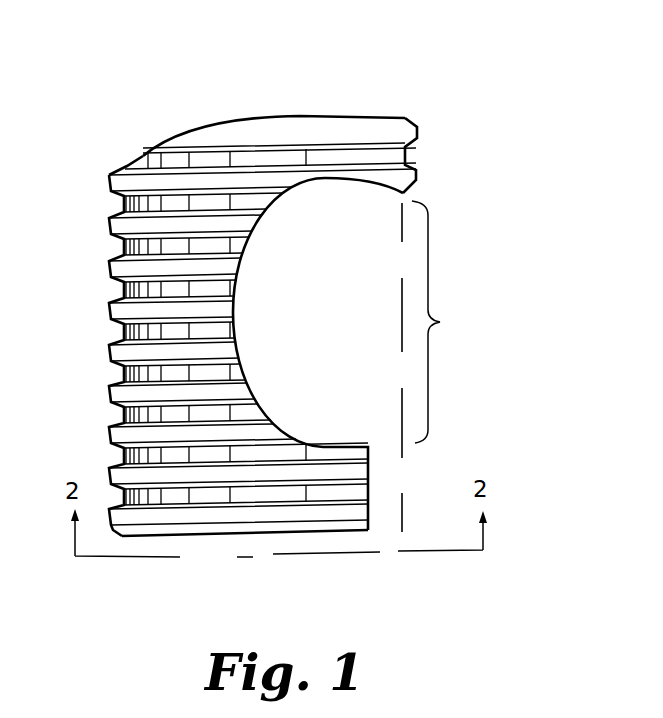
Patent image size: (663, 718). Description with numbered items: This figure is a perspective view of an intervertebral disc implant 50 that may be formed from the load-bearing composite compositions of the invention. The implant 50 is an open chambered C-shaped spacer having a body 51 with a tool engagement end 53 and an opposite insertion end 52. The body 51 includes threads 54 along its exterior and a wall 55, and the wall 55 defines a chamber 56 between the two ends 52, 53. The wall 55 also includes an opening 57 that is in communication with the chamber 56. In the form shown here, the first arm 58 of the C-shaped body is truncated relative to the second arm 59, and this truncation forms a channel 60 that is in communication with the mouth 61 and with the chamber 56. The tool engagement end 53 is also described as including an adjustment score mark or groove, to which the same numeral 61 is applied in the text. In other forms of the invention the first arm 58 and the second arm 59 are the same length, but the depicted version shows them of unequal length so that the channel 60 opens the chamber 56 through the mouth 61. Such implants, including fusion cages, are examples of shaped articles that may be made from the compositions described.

The implant 50 is at (436, 56).
The body 51 is at (124, 247).
The insertion end 52 is at (293, 114).
The tool engagement end 53 is at (241, 537).
The threads 54 is at (110, 310).
The wall 55 is at (127, 167).
The chamber 56 is at (337, 310).
The opening 57 is at (364, 232).
The first arm 58 is at (325, 445).
The second arm 59 is at (418, 122).
The channel 60 is at (390, 522).
The mouth 61 is at (443, 322).